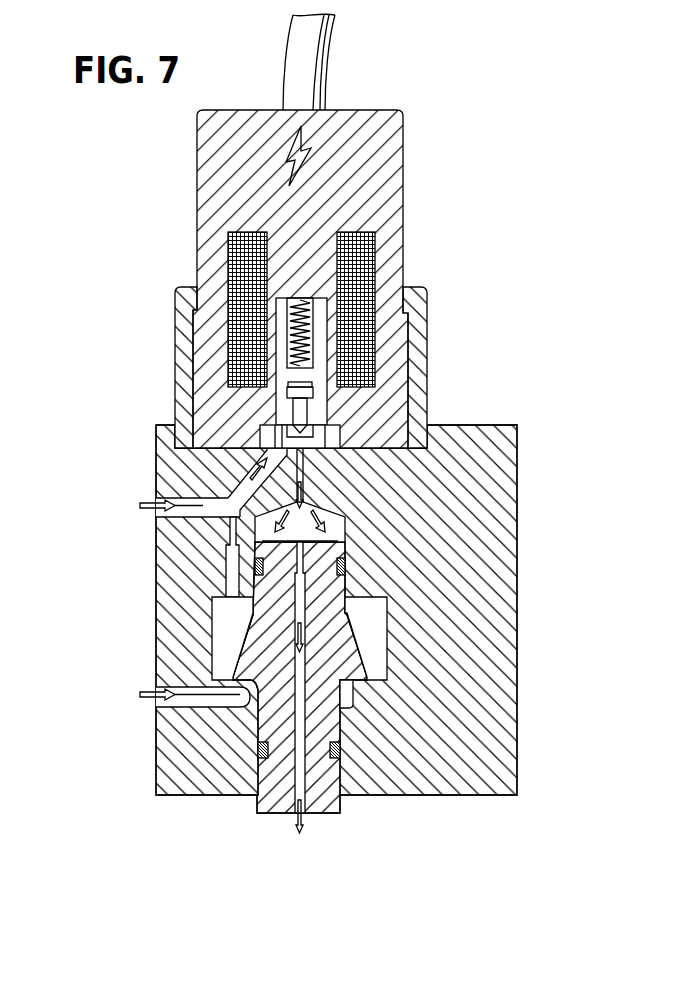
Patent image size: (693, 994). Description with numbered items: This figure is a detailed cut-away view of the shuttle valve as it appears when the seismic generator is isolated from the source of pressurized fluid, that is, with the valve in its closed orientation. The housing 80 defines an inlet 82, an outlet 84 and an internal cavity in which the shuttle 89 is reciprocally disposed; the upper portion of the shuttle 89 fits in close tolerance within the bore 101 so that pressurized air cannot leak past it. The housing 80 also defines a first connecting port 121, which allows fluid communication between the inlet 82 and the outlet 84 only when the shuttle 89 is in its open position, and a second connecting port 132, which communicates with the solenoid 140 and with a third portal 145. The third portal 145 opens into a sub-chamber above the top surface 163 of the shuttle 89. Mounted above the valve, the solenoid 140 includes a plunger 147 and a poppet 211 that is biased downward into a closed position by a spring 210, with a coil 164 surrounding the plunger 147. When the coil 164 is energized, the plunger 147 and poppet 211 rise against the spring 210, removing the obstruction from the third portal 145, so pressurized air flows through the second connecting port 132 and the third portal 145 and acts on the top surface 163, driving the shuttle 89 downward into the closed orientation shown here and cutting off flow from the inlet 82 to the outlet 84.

The housing 80 is at (517, 592).
The inlet 82 is at (157, 500).
The outlet 84 is at (158, 690).
The shuttle 89 is at (345, 652).
The bore 101 is at (325, 507).
The first connecting port 121 is at (232, 562).
The second connecting port 132 is at (250, 482).
The solenoid 140 is at (358, 165).
The third portal 145 is at (300, 465).
The plunger 147 is at (355, 352).
The top surface 163 is at (310, 537).
The coil 164 is at (227, 278).
The spring 210 is at (300, 300).
The poppet 211 is at (300, 422).